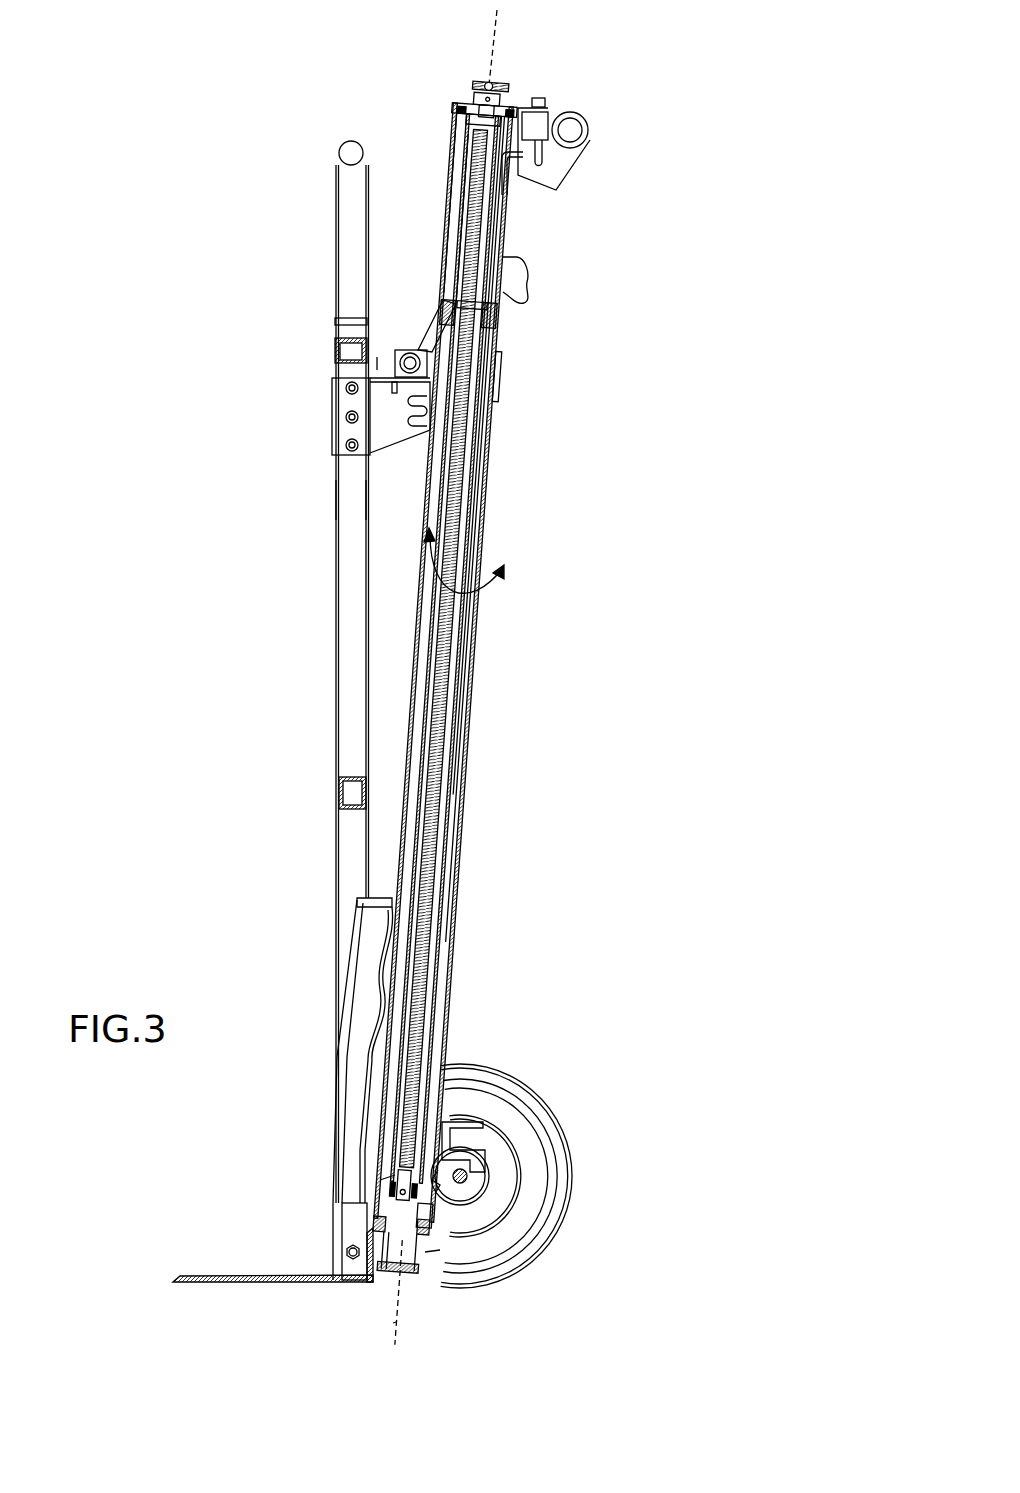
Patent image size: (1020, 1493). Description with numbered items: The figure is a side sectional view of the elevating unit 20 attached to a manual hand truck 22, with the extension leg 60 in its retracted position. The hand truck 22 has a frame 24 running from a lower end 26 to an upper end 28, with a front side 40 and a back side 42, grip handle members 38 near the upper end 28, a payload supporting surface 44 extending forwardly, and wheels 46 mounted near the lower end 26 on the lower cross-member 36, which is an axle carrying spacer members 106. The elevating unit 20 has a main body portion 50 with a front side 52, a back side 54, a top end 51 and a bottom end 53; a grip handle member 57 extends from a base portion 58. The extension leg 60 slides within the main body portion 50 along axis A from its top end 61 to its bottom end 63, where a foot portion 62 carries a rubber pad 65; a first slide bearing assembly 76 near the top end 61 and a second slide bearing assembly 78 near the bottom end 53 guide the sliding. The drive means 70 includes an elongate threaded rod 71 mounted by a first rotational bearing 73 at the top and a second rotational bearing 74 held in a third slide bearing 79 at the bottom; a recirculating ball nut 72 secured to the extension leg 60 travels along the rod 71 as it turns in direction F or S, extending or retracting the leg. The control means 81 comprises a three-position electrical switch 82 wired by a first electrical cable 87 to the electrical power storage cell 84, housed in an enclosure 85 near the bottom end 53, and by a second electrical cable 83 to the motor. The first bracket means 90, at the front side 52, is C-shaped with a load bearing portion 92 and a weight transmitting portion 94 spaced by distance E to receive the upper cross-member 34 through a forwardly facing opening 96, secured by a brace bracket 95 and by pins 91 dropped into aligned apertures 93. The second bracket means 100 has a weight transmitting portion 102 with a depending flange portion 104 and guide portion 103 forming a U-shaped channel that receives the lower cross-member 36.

The elevating unit 20 is at (634, 428).
The manual hand truck 22 is at (194, 545).
The frame 24 is at (340, 560).
The lower end 26 is at (352, 1212).
The upper end 28 is at (340, 155).
The upper cross-member 34 is at (395, 380).
The lower cross-member 36 is at (475, 1195).
The grip handle members 38 is at (525, 282).
The front side 40 is at (337, 502).
The back side 42 is at (370, 510).
The payload supporting surface 44 is at (232, 1276).
The wheels 46 is at (565, 1157).
The main body portion 50 is at (470, 743).
The top end 51 is at (467, 106).
The front side 52 is at (416, 603).
The bottom end 53 is at (443, 1237).
The back side 54 is at (497, 443).
The grip handle member 57 is at (590, 128).
The base portion 58 is at (552, 185).
The extension leg 60 is at (453, 960).
The top end 61 is at (443, 242).
The foot portion 62 is at (435, 1013).
The bottom end 63 is at (382, 1262).
The rubber pad 65 is at (414, 1292).
The drive means 70 is at (522, 58).
The elongate threaded rod 71 is at (473, 170).
The recirculating ball nut 72 is at (502, 305).
The first rotational bearing 73 is at (498, 115).
The second rotational bearing 74 is at (395, 1188).
The first slide bearing assembly 76 is at (455, 308).
The second slide bearing assembly 78 is at (425, 1252).
The third slide bearing 79 is at (385, 1212).
The control means 81 is at (486, 80).
The three-position electrical switch 82 is at (545, 103).
The second electrical cable 83 is at (545, 155).
The electrical power storage cell 84 is at (386, 930).
The enclosure 85 is at (355, 925).
The first electrical cable 87 is at (528, 180).
The first bracket means 90 is at (410, 395).
The pins 91 is at (380, 347).
The load bearing portion 92 is at (433, 380).
The apertures 93 is at (388, 350).
The weight transmitting portion 94 is at (430, 347).
The brace bracket 95 is at (503, 382).
The forwardly facing opening 96 is at (405, 360).
The second bracket means 100 is at (467, 1130).
The weight transmitting portion 102 is at (475, 1158).
The guide portion 103 is at (425, 1172).
The flange portion 104 is at (483, 1160).
The spacer members 106 is at (468, 1183).